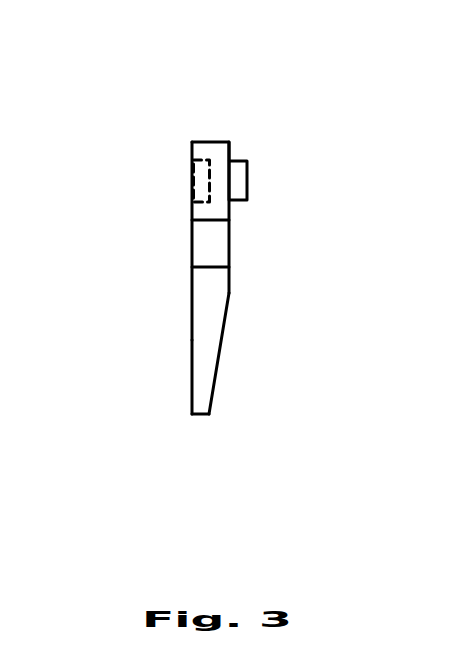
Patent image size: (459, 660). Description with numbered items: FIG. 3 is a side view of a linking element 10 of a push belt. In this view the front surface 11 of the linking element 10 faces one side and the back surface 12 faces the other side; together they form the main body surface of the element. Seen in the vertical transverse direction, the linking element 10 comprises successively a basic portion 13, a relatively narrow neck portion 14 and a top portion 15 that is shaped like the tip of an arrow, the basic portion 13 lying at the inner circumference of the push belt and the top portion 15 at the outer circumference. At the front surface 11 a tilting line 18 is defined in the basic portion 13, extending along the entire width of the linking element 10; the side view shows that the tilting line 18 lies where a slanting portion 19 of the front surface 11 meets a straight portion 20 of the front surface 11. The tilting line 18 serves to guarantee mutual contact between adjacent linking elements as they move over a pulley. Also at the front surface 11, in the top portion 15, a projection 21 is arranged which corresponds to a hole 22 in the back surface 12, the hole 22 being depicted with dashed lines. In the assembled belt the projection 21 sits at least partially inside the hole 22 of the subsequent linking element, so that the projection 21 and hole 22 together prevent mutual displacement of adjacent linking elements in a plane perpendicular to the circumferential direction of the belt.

The linking element 10 is at (150, 128).
The front surface 11 is at (228, 333).
The back surface 12 is at (192, 376).
The basic portion 13 is at (205, 312).
The neck portion 14 is at (203, 242).
The top portion 15 is at (222, 152).
The tilting line 18 is at (230, 296).
The slanting portion 19 is at (216, 363).
The straight portion 20 is at (230, 236).
The projection 21 is at (237, 178).
The hole 22 is at (200, 176).